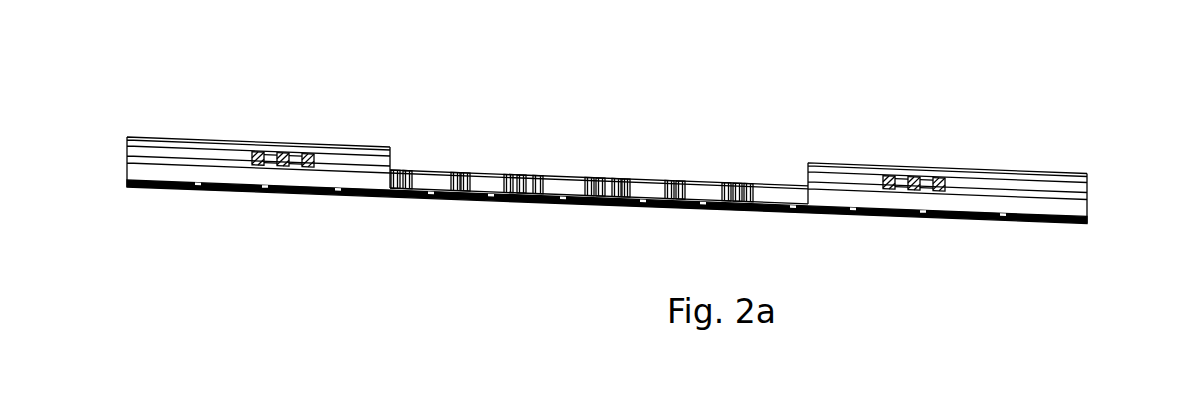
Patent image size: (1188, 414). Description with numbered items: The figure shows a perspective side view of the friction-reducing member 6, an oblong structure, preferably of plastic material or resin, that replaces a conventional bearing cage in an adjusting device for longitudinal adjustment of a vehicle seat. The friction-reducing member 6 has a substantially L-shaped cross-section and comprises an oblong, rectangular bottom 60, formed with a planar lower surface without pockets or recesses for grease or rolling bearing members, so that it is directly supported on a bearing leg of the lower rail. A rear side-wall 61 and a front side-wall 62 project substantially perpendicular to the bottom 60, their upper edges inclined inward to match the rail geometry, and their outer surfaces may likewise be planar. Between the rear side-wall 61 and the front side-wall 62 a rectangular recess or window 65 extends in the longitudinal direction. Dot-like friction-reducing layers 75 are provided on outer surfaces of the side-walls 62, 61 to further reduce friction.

The friction-reducing member 6 is at (409, 35).
The bottom 60 is at (622, 202).
The rear side-wall 61 is at (1088, 193).
The front side-wall 62 is at (190, 145).
The rectangular recess or window 65 is at (586, 152).
The dot-like friction-reducing layers 75 is at (312, 150).